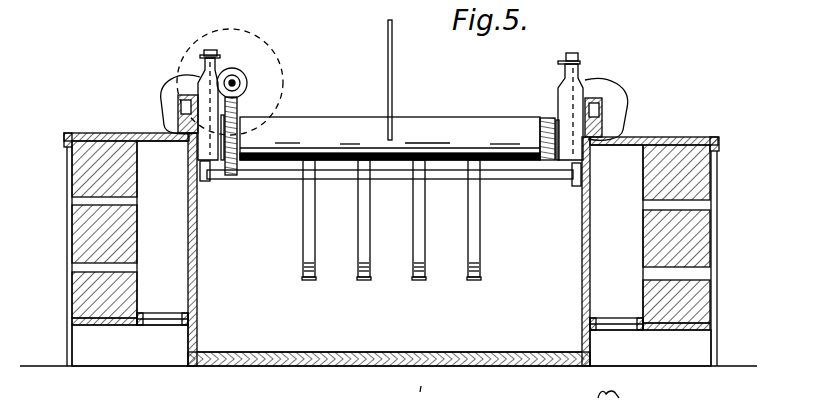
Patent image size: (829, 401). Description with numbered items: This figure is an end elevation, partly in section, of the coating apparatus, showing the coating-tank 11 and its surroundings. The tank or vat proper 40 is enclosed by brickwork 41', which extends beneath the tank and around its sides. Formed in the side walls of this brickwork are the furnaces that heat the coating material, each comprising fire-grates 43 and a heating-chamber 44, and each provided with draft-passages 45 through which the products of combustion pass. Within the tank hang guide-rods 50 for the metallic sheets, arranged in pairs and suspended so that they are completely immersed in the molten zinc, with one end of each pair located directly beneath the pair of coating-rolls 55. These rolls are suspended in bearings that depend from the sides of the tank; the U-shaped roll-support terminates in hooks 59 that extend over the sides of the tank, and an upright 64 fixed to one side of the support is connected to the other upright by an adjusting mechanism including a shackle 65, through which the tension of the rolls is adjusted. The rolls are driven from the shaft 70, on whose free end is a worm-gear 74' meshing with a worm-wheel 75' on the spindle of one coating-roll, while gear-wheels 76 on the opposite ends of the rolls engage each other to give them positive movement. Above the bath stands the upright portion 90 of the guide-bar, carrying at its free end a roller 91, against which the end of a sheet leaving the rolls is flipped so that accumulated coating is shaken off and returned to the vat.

The coating-tank 11 is at (427, 327).
The tank or vat proper 40 is at (197, 259).
The brickwork 41' is at (389, 374).
The fire-grates 43 is at (593, 317).
The heating-chamber 44 is at (390, 203).
The draft-passages 45 is at (770, 190).
The guide-rods 50 is at (481, 272).
The coating-rolls 55 is at (390, 138).
The hooks 59 is at (177, 87).
The upright 64 is at (178, 97).
The shackle 65 is at (205, 54).
The shaft 70 is at (241, 83).
The worm-gear 74' is at (242, 82).
The worm-wheel 75' is at (260, 129).
The gear-wheels 76 is at (547, 117).
The upright portion 90 is at (395, 74).
The roller 91 is at (26, 392).